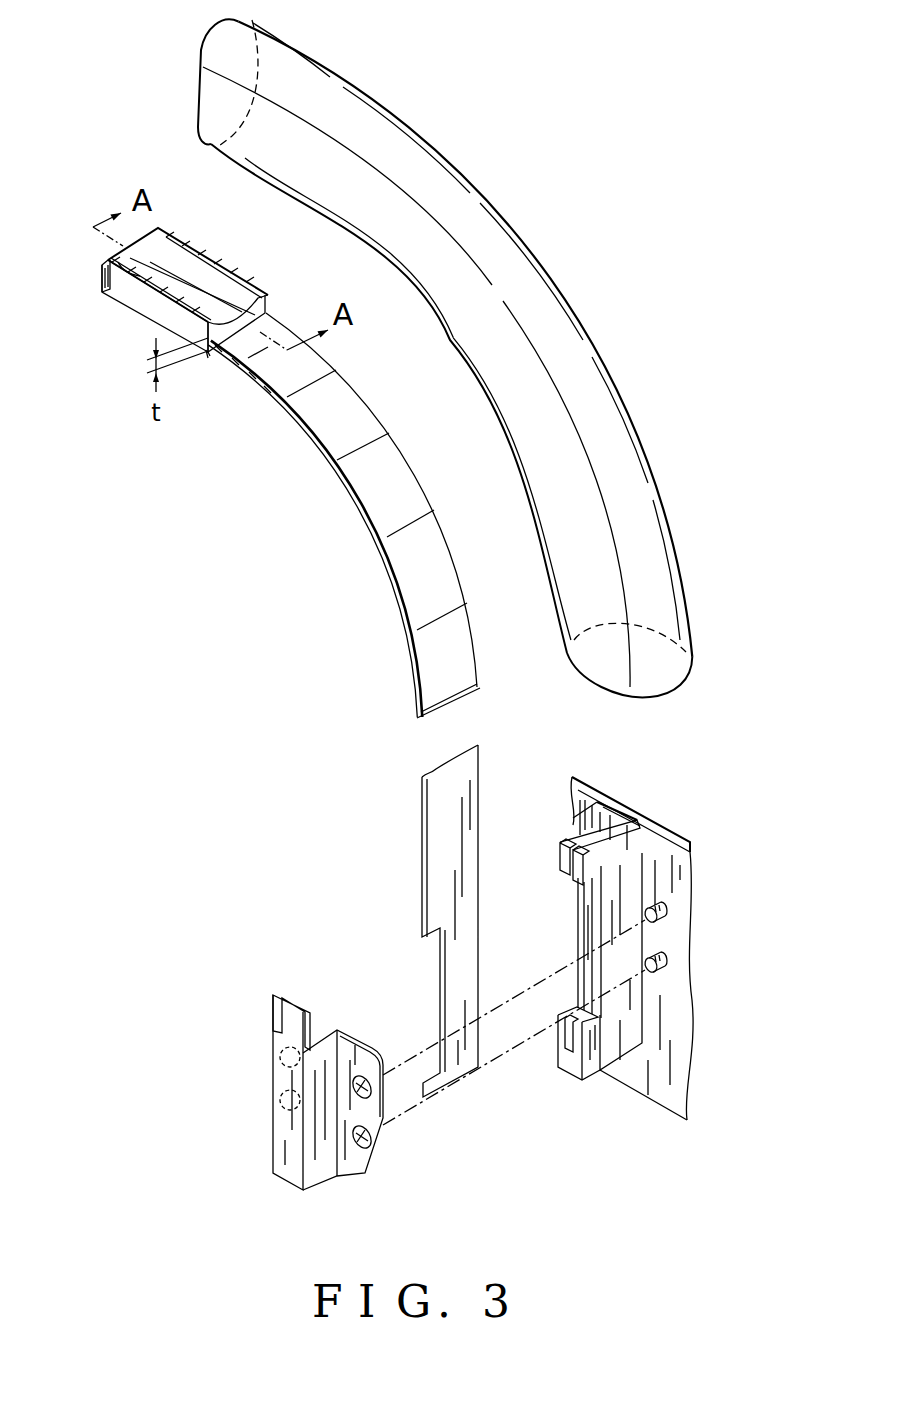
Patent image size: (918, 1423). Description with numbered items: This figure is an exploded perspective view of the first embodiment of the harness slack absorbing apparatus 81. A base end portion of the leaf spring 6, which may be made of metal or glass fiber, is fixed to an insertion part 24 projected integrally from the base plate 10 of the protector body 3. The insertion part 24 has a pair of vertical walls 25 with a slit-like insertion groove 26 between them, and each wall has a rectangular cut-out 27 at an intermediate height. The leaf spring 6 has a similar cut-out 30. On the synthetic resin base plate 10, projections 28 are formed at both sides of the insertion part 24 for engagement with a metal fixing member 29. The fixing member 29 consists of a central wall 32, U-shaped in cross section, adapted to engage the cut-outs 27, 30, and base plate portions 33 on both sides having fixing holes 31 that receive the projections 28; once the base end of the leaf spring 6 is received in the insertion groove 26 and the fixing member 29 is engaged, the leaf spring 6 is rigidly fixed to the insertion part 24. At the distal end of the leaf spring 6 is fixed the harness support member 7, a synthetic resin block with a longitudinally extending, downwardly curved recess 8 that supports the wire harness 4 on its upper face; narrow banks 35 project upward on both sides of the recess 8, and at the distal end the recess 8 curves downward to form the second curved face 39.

The protector body 3 is at (614, 1088).
The wire harness 4 is at (683, 582).
The leaf spring 6 is at (363, 515).
The harness support member 7 is at (145, 325).
The recess 8 is at (200, 282).
The base plate 10 is at (663, 1006).
The insertion part 24 is at (578, 900).
The vertical walls 25 is at (612, 858).
The insertion groove 26 is at (596, 830).
The cut-outs 27 is at (576, 940).
The projections 28 is at (668, 962).
The fixing member 29 is at (263, 1078).
The cut-out 30 is at (435, 1000).
The fixing holes 31 is at (362, 1152).
The central wall 32 is at (283, 1182).
The base plate portions 33 is at (367, 1113).
The narrow banks 35 is at (145, 285).
The second curved face 39 is at (140, 253).
The harness slack absorbing apparatus 81 is at (307, 458).